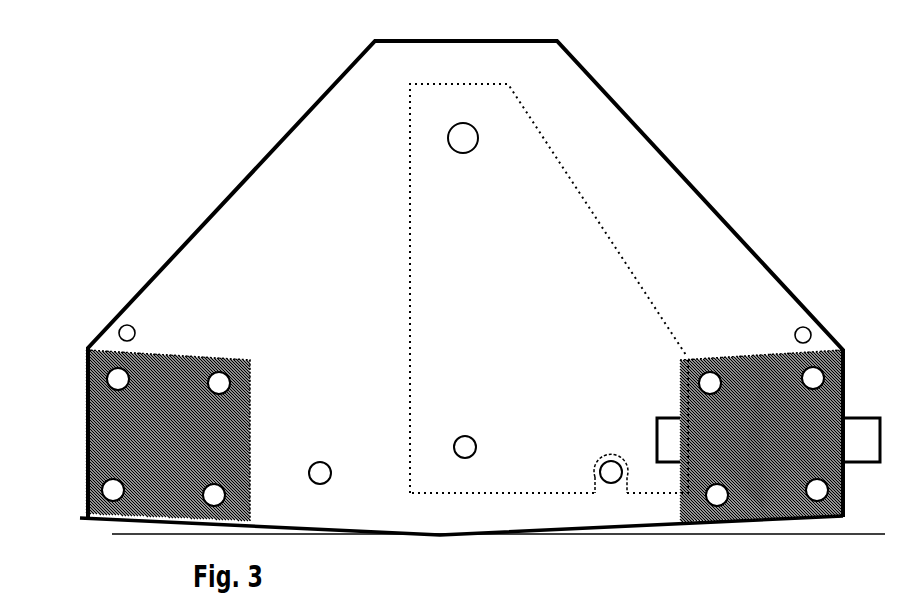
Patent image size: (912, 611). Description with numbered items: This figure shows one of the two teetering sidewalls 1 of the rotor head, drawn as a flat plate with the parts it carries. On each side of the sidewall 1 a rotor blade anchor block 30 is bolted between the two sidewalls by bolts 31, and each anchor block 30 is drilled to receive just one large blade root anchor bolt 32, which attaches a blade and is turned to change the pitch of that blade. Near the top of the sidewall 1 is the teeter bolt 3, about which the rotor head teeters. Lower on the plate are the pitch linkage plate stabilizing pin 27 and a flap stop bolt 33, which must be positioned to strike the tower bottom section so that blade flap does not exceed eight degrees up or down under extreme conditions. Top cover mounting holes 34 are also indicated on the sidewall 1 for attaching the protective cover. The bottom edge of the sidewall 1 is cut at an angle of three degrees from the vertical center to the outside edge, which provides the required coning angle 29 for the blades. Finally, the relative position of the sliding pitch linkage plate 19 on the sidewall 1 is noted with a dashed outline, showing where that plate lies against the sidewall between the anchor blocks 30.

The teetering sidewall 1 is at (634, 113).
The teeter bolt 3 is at (482, 130).
The pitch linkage plate 19 is at (607, 217).
The pitch linkage plate stabilizing pin 27 is at (458, 458).
The coning angle 29 is at (833, 525).
The rotor blade anchor block 30 is at (766, 416).
The anchor block bolt 31 is at (812, 378).
The blade root anchor bolt 32 is at (863, 406).
The flap stop bolt 33 is at (612, 474).
The top cover mounting hole 34 is at (799, 340).